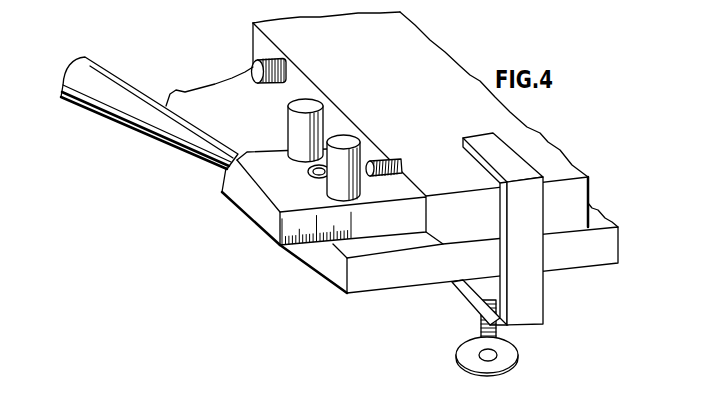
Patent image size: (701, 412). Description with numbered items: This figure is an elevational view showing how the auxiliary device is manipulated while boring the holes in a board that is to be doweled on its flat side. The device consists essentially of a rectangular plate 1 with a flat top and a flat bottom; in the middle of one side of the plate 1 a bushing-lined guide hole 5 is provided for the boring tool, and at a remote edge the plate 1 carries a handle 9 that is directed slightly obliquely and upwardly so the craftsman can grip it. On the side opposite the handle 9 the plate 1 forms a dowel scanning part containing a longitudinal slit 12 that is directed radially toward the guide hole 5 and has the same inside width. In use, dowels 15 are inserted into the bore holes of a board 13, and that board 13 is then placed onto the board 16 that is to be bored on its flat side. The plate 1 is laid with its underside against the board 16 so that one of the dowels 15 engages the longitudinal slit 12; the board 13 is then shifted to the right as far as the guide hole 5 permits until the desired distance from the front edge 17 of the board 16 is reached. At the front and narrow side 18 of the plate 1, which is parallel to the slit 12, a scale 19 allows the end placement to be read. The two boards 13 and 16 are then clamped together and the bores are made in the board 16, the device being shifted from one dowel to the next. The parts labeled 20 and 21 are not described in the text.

The rectangular plate 1 is at (296, 156).
The guide hole 5 is at (308, 172).
The handle 9 is at (94, 70).
The longitudinal slit 12 is at (401, 166).
The board 13 is at (431, 50).
The dowels 15 is at (256, 66).
The board 16 is at (583, 250).
The front edge 17 is at (324, 258).
The front and narrow side 18 is at (380, 225).
The scale 19 is at (287, 246).
The threaded rod 20 is at (490, 356).
The clamping knob 21 is at (518, 374).